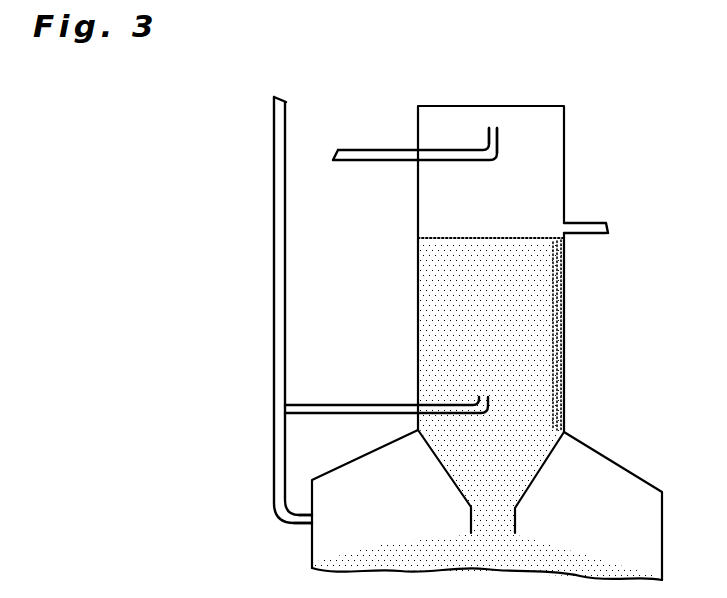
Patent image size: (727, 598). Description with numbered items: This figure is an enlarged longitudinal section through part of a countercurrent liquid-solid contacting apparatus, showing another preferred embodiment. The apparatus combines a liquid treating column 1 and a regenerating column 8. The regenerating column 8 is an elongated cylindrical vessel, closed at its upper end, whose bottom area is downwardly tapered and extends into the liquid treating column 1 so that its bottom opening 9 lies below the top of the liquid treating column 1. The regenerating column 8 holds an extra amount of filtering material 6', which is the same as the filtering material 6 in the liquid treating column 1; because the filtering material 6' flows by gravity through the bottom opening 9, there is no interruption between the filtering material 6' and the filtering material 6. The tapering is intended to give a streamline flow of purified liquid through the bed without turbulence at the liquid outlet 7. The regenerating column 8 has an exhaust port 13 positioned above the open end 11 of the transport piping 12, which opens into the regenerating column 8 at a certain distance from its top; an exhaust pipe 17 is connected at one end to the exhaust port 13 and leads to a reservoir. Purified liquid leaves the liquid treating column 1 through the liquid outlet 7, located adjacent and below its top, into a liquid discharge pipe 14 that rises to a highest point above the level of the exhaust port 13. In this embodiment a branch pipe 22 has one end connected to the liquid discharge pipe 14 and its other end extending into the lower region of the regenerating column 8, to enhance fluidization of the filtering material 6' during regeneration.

The liquid treating column 1 is at (645, 475).
The filtering material 6 is at (449, 556).
The filtering material 6' is at (453, 386).
The liquid outlet 7 is at (312, 521).
The regenerating column 8 is at (414, 220).
The bottom opening 9 is at (500, 523).
The open end 11 is at (564, 237).
The transport piping 12 is at (596, 222).
The exhaust port 13 is at (491, 128).
The liquid discharge pipe 14 is at (274, 252).
The exhaust pipe 17 is at (370, 150).
The branch pipe 22 is at (356, 405).